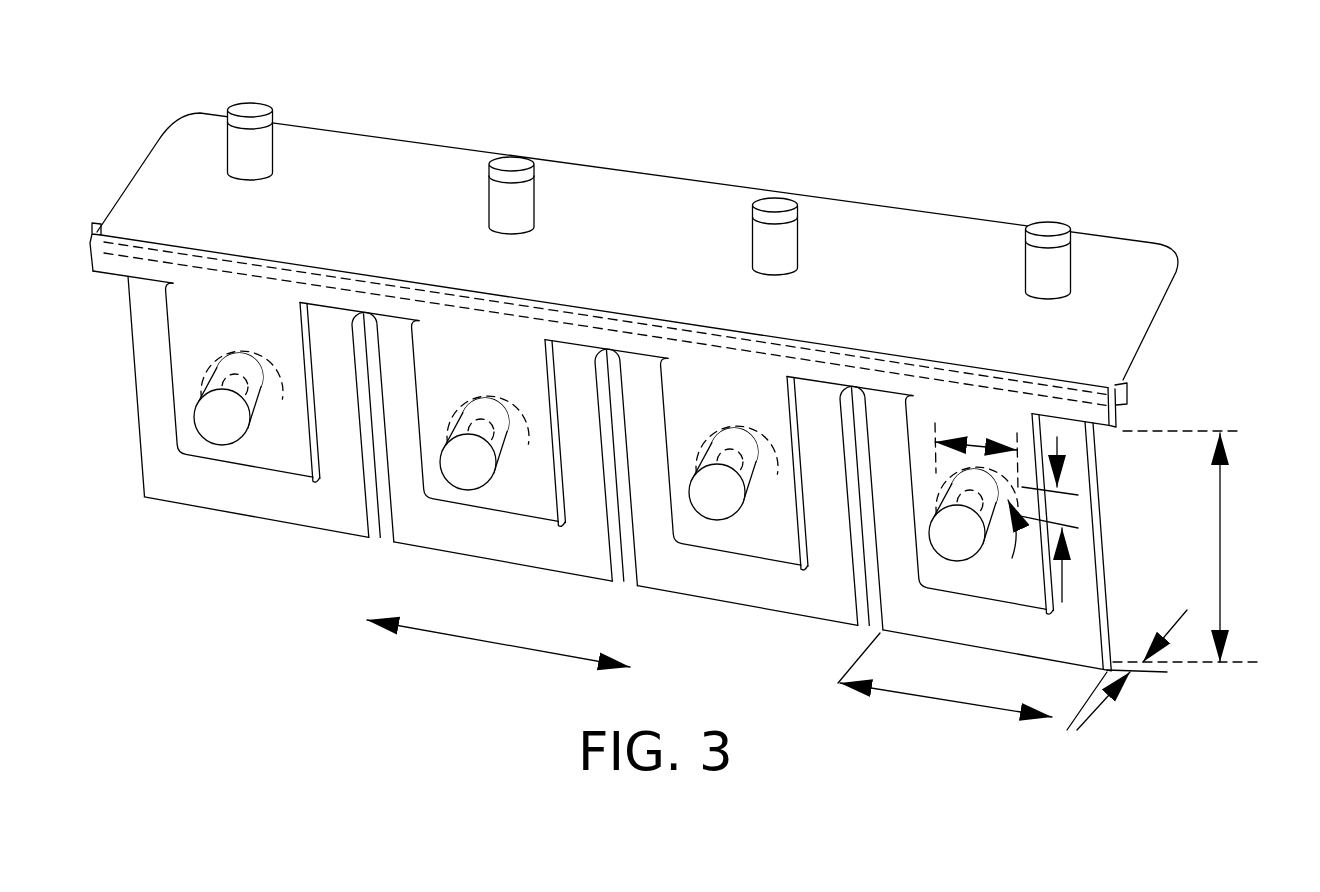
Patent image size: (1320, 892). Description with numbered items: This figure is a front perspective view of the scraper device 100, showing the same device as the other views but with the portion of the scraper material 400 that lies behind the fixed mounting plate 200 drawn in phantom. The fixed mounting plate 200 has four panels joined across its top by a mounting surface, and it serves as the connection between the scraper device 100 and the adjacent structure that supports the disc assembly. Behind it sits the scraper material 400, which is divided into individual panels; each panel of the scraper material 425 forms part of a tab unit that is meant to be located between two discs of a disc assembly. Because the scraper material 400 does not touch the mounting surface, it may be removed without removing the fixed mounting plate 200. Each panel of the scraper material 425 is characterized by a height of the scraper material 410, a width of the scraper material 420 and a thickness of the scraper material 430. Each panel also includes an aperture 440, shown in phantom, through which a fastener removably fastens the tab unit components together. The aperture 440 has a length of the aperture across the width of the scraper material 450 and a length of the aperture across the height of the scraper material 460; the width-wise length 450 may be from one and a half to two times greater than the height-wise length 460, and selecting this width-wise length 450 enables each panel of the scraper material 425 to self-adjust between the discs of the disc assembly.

The scraper device 100 is at (927, 168).
The fixed mounting plate 200 is at (947, 573).
The scraper material 400 is at (670, 577).
The height of the scraper material 410 is at (1225, 522).
The width of the scraper material 420 is at (937, 697).
The panel of the scraper material 425 is at (957, 620).
The thickness of the scraper material 430 is at (1100, 708).
The aperture 440 is at (1014, 548).
The length of the aperture across the width of the scraper material 450 is at (977, 443).
The length of the aperture across the height of the scraper material 460 is at (1070, 590).